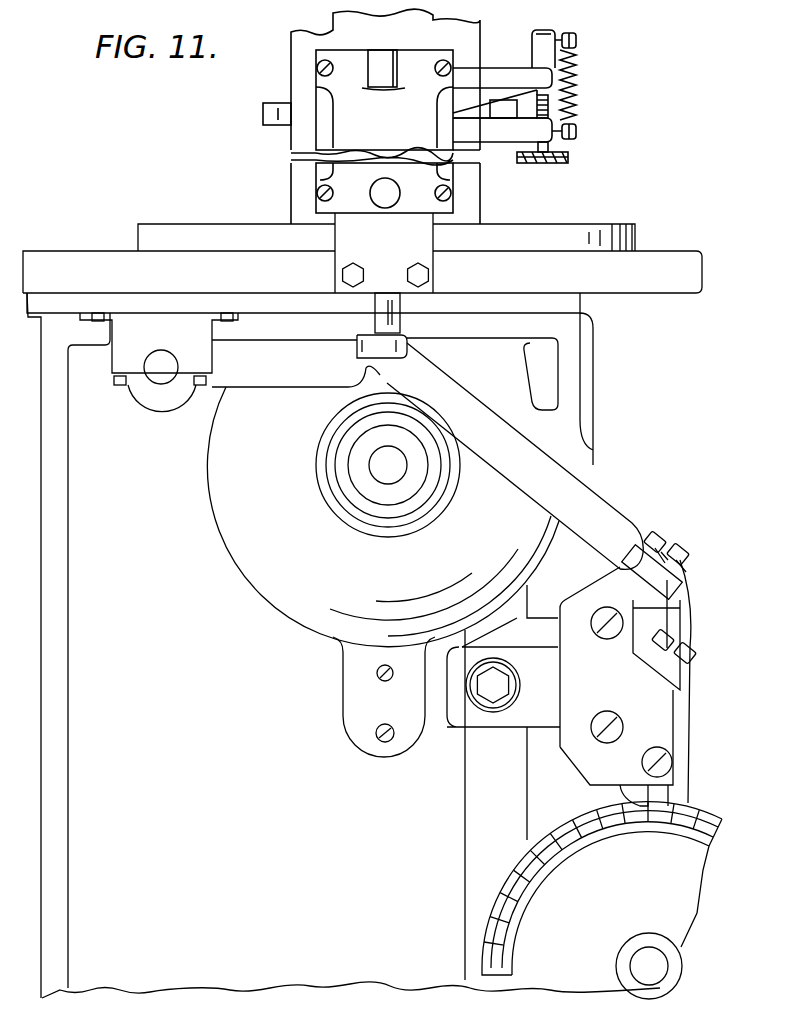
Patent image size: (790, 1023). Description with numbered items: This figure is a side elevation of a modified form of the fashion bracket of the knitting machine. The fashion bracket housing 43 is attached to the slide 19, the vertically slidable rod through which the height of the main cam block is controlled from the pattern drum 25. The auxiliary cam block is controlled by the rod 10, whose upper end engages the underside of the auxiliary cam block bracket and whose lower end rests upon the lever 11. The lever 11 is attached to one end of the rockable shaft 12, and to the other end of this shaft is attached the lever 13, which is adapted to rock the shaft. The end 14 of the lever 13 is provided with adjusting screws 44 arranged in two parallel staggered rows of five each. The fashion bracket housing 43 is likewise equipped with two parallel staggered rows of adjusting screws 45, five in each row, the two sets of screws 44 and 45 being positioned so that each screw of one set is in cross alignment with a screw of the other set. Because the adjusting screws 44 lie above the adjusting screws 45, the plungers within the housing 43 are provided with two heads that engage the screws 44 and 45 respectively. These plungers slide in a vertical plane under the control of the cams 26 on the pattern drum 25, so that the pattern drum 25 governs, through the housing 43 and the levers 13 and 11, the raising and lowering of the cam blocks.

The rod 10 is at (400, 319).
The lever 11 is at (309, 361).
The rockable shaft 12 is at (181, 343).
The lever 13 is at (580, 493).
The end of lever 14 is at (637, 556).
The slide 19 is at (503, 782).
The pattern drum 25 is at (610, 915).
The cams 26 is at (592, 813).
The fashion bracket housing 43 is at (667, 728).
The adjusting screws 44 is at (677, 552).
The adjusting screws 45 is at (686, 652).